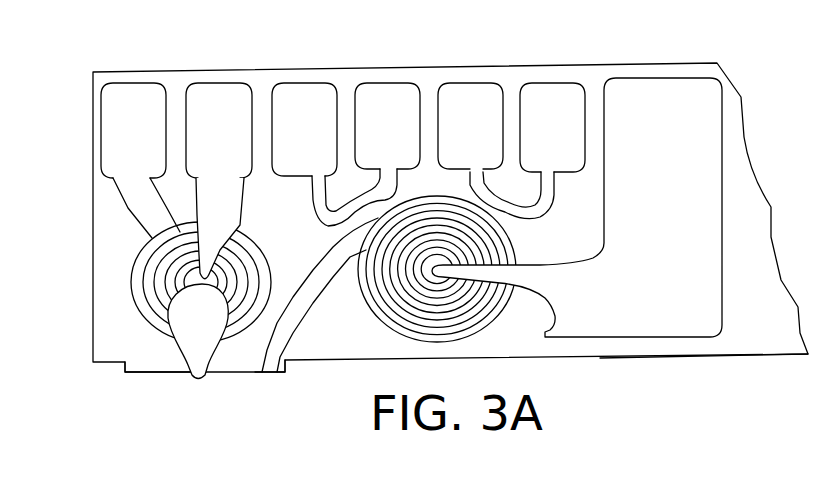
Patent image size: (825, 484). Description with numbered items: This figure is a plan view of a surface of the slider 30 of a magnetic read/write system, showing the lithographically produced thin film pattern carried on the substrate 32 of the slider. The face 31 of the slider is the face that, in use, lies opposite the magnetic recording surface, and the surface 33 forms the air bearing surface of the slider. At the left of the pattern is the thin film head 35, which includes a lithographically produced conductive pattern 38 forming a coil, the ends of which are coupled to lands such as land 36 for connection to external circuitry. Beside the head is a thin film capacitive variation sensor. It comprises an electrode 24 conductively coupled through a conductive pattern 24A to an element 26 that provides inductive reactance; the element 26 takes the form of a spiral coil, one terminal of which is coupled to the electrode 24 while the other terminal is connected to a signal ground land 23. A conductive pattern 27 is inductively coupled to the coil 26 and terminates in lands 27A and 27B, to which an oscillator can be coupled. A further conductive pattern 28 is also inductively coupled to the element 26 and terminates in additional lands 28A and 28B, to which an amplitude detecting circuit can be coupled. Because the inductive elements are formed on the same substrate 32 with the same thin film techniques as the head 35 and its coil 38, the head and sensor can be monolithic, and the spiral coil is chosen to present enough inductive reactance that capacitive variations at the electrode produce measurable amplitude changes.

The signal ground land 23 is at (638, 83).
The electrode 24 is at (262, 374).
The conductive pattern 24A is at (290, 323).
The spiral coil 26 is at (428, 316).
The conductive pattern 27 is at (547, 212).
The land 27A is at (453, 87).
The land 27B is at (547, 85).
The conductive pattern 28 is at (317, 208).
The land 28A is at (298, 87).
The land 28B is at (380, 88).
The slider 30 is at (773, 96).
The face of the slider 31 is at (722, 355).
The substrate 32 is at (745, 333).
The air bearing surface 33 is at (162, 376).
The thin film head 35 is at (163, 302).
The land 36 is at (128, 88).
The conductive pattern forming a coil 38 is at (248, 232).